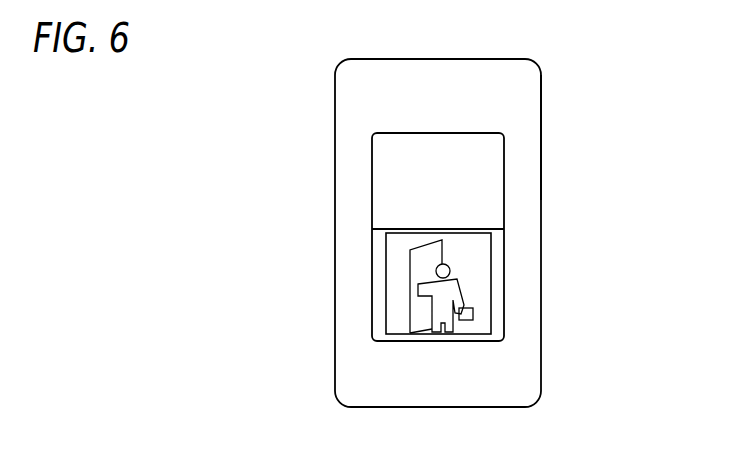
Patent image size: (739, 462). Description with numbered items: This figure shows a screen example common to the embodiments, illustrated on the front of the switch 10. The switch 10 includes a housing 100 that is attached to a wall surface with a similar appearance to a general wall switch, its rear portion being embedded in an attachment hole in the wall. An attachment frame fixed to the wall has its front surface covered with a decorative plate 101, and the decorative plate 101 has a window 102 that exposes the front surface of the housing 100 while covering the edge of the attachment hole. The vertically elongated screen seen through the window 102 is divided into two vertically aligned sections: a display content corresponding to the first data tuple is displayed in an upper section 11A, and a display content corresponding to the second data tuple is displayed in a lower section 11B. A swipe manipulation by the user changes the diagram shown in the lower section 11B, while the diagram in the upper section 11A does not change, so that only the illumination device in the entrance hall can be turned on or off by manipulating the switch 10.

The switch 10 is at (334, 91).
The decorative plate 101 is at (530, 86).
The window 102 is at (424, 132).
The housing 100 is at (485, 197).
The upper section 11A is at (380, 178).
The lower section 11B is at (378, 283).